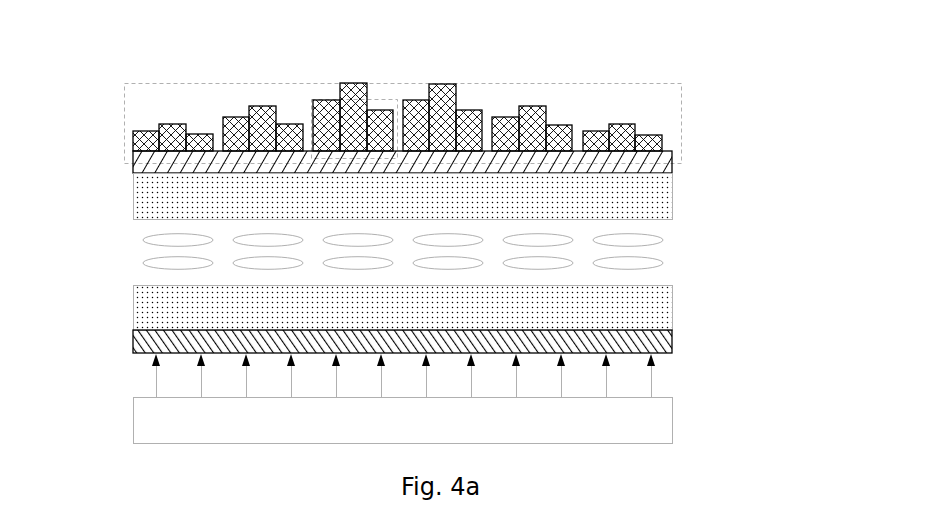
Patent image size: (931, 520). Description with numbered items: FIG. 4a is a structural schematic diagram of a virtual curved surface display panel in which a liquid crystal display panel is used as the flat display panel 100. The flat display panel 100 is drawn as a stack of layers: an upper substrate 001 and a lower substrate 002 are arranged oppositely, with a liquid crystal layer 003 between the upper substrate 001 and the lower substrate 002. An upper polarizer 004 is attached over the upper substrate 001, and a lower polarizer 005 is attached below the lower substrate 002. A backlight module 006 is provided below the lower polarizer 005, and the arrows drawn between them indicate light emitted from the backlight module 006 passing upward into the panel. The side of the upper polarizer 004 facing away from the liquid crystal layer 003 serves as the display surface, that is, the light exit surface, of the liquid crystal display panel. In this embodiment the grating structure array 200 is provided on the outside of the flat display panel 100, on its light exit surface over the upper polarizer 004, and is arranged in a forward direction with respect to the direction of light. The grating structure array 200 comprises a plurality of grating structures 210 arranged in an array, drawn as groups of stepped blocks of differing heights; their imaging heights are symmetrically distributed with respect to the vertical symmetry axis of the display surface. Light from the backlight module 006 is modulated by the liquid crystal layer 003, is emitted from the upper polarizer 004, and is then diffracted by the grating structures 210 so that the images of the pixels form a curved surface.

The grating structure array 200 is at (370, 109).
The grating structure 210 is at (372, 98).
The flat display panel 100 is at (476, 252).
The upper polarizer 004 is at (672, 164).
The upper substrate 001 is at (672, 198).
The liquid crystal layer 003 is at (672, 250).
The lower substrate 002 is at (672, 308).
The lower polarizer 005 is at (443, 341).
The backlight module 006 is at (672, 420).